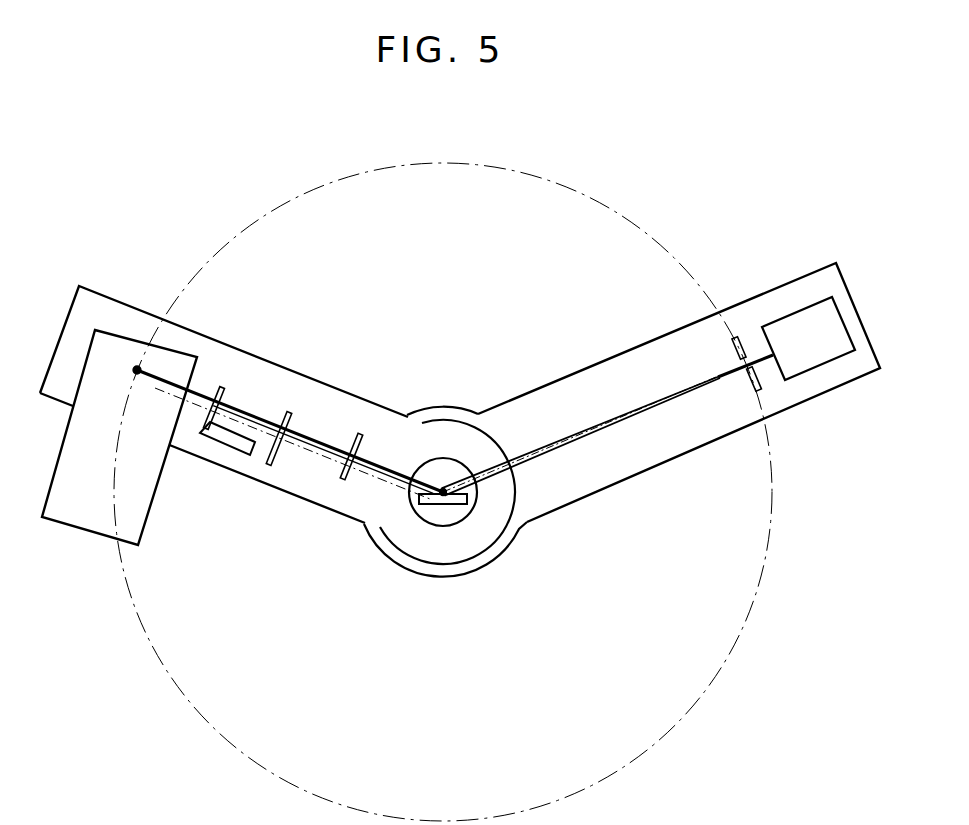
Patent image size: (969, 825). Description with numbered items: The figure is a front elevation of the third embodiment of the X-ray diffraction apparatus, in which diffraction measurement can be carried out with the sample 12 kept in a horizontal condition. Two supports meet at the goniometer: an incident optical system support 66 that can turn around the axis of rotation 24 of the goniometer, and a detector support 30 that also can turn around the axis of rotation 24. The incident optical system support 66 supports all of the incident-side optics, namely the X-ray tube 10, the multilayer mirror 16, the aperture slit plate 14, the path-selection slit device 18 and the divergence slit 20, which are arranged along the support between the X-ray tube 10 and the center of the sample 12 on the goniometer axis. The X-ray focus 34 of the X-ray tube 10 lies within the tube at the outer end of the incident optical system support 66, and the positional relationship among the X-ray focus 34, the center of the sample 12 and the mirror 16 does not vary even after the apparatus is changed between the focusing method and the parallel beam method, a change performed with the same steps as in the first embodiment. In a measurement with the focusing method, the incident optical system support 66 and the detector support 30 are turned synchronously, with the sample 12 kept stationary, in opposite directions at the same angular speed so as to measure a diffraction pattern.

The X-ray tube 10 is at (85, 531).
The sample 12 is at (456, 506).
The aperture slit plate 14 is at (219, 392).
The multilayer mirror 16 is at (225, 447).
The path-selection slit device 18 is at (291, 411).
The divergence slit 20 is at (363, 433).
The axis of rotation of the goniometer 24 is at (437, 506).
The detector support 30 is at (652, 469).
The X-ray focus 34 is at (134, 371).
The incident optical system support 66 is at (287, 493).